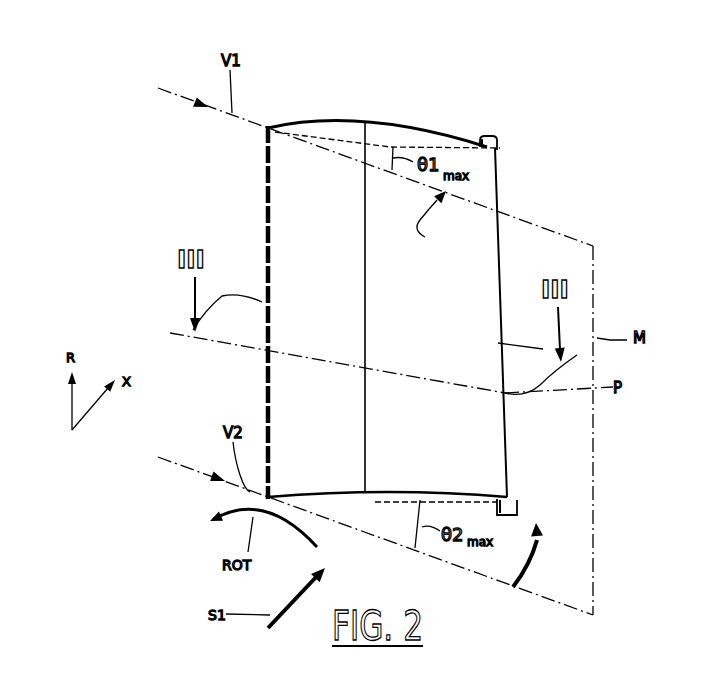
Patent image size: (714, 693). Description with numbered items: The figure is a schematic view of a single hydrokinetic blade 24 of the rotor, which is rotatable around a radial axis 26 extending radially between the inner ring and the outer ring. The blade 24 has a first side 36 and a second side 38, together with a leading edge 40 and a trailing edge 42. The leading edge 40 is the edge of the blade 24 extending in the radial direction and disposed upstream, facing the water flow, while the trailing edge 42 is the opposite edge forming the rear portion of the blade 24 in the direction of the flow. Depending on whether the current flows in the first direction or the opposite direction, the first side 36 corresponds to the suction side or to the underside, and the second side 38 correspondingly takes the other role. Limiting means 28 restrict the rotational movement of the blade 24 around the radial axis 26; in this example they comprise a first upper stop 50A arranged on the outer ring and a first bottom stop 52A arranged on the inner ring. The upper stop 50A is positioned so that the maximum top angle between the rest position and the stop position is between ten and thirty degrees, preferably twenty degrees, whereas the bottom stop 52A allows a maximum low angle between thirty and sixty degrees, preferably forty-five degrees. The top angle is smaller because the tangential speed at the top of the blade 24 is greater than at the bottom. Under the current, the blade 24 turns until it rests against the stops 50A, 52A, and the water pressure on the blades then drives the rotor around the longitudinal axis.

The blade 24 is at (400, 271).
The radial axis 26 is at (283, 120).
The limiting means 28 is at (511, 120).
The first side 36 is at (428, 122).
The second side 38 is at (425, 237).
The leading edge 40 is at (250, 195).
The trailing edge 42 is at (505, 437).
The first upper stop 50A is at (498, 145).
The first bottom stop 52A is at (520, 507).